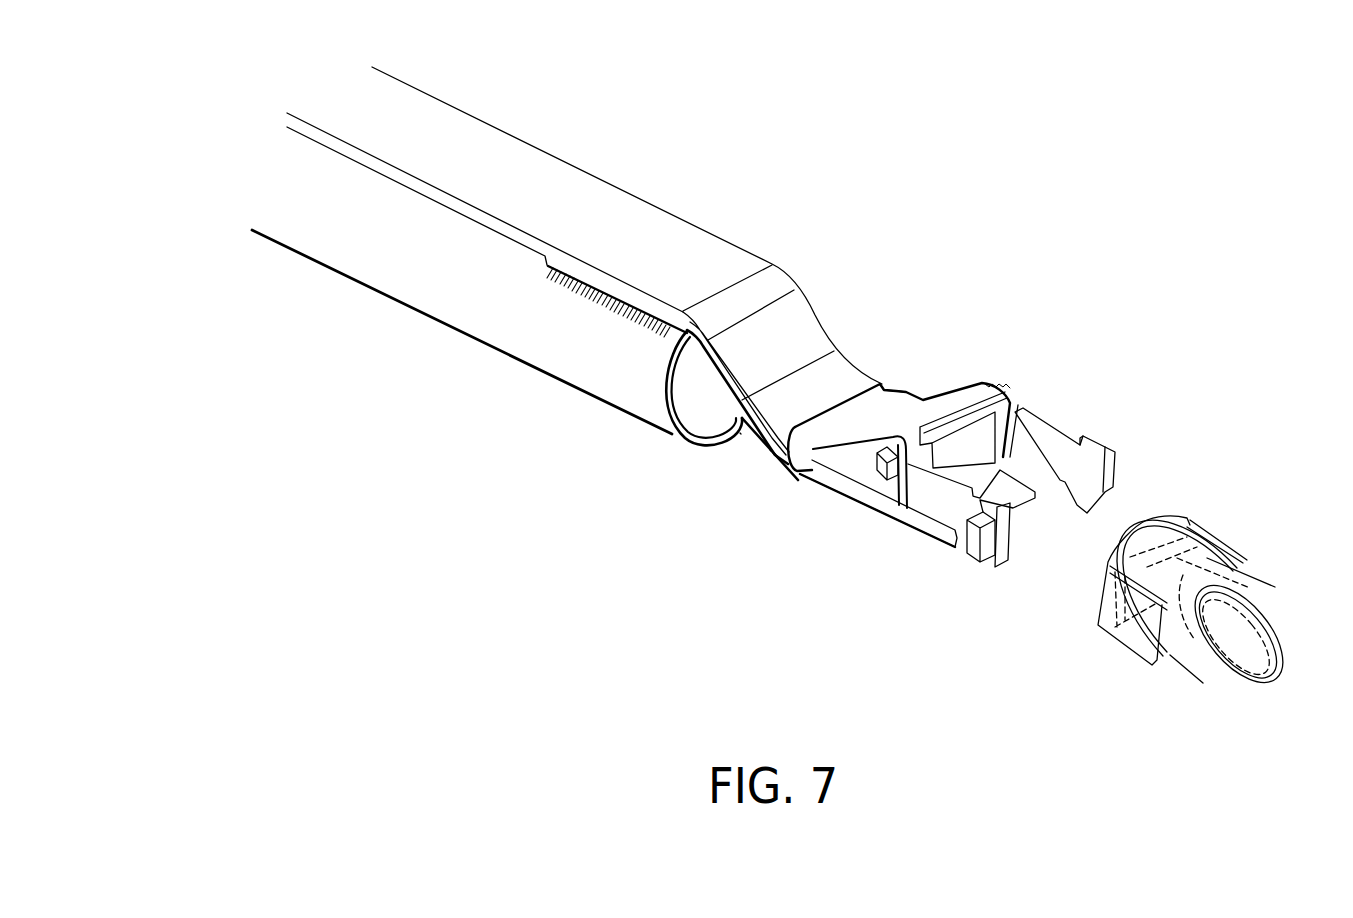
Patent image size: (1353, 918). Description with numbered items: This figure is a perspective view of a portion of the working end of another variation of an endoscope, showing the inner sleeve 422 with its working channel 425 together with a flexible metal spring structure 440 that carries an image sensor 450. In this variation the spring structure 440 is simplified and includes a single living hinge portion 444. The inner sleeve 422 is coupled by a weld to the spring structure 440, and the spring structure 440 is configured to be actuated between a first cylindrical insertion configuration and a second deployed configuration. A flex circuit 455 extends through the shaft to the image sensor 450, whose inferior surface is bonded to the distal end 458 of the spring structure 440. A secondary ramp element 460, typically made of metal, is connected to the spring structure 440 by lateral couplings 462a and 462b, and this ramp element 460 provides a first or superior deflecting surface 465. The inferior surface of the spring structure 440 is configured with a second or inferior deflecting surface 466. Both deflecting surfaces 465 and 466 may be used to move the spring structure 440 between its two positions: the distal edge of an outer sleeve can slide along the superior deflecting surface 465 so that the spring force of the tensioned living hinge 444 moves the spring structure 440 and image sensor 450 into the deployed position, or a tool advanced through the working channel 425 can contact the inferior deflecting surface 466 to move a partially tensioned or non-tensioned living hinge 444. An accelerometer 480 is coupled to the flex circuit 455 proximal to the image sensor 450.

The inner sleeve 422 is at (603, 302).
The working channel 425 is at (683, 410).
The spring structure 440 is at (770, 450).
The living hinge portion 444 is at (710, 362).
The image sensor 450 is at (1242, 525).
The flex circuit 455 is at (807, 320).
The distal end 458 is at (925, 537).
The secondary ramp element 460 is at (963, 387).
The lateral coupling 462a is at (802, 473).
The lateral coupling 462b is at (903, 383).
The superior deflecting surface 465 is at (930, 400).
The inferior deflecting surface 466 is at (740, 433).
The accelerometer 480 is at (888, 463).